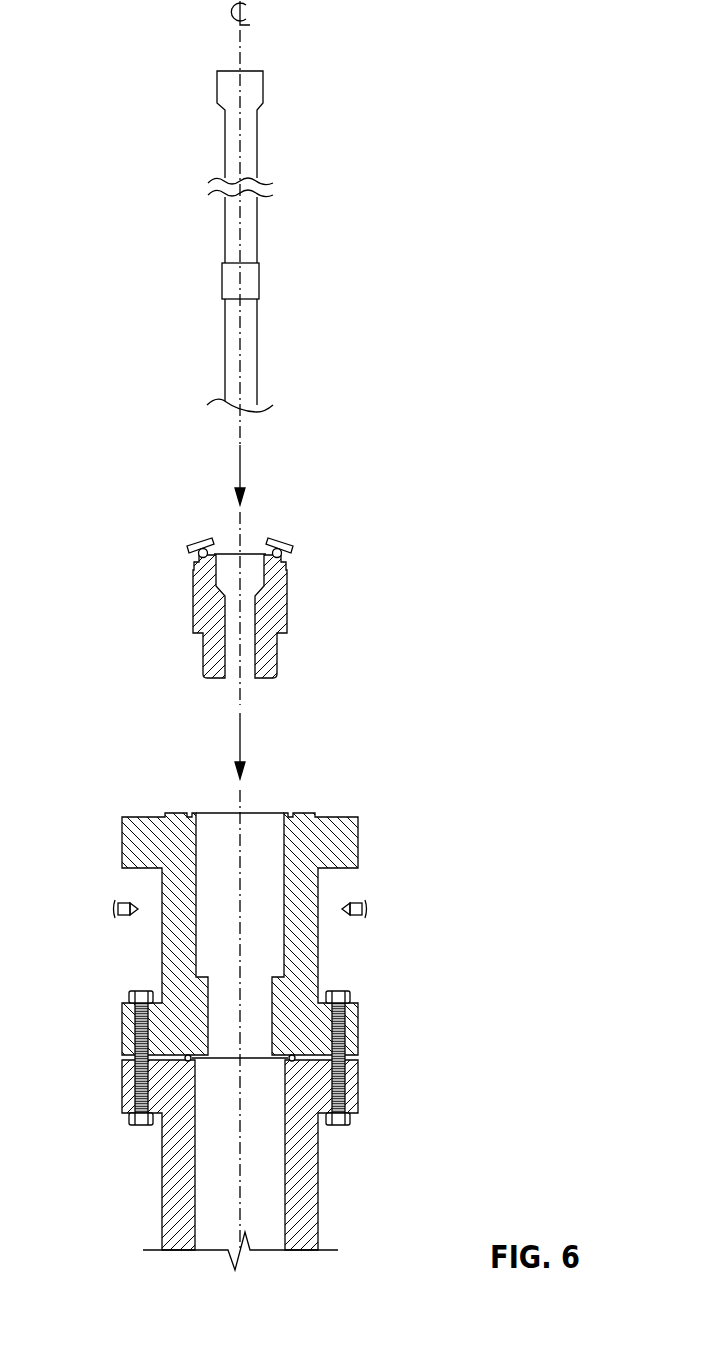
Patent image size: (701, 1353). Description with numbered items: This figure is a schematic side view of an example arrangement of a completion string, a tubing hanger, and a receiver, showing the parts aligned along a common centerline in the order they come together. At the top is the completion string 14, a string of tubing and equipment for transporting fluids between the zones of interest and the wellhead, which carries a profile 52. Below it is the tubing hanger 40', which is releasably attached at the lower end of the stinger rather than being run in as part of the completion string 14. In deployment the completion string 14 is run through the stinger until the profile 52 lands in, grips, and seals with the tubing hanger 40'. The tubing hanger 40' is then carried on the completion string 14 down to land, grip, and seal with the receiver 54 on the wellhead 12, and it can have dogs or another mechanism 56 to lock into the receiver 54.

The profile 52 is at (265, 87).
The completion string 14 is at (257, 352).
The mechanism 56 is at (281, 549).
The tubing hanger 40' is at (278, 616).
The receiver 54 is at (358, 822).
The wellhead 12 is at (358, 1098).